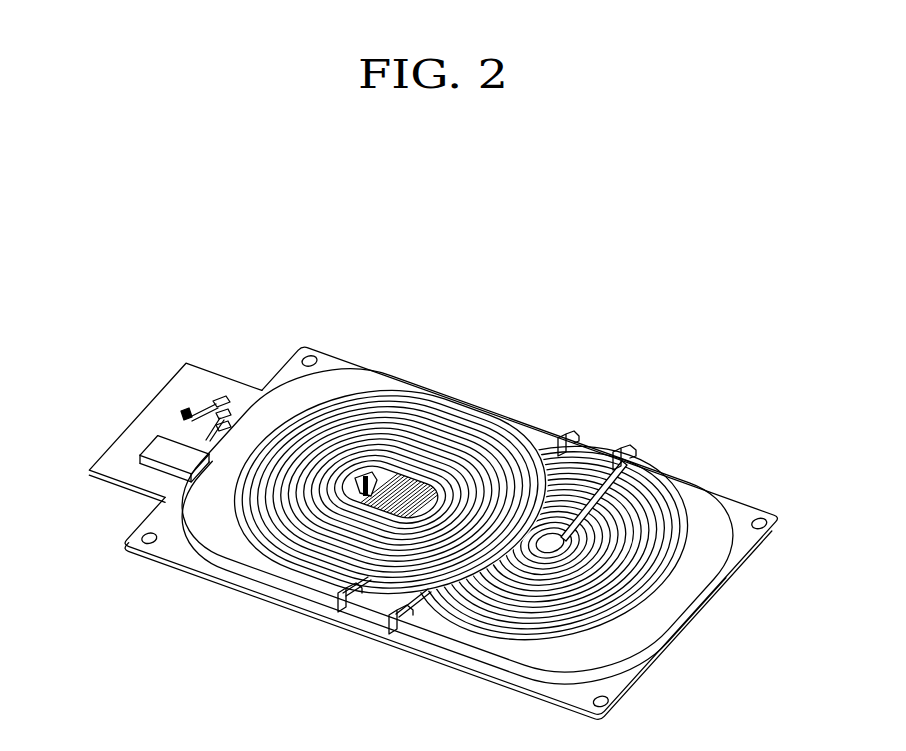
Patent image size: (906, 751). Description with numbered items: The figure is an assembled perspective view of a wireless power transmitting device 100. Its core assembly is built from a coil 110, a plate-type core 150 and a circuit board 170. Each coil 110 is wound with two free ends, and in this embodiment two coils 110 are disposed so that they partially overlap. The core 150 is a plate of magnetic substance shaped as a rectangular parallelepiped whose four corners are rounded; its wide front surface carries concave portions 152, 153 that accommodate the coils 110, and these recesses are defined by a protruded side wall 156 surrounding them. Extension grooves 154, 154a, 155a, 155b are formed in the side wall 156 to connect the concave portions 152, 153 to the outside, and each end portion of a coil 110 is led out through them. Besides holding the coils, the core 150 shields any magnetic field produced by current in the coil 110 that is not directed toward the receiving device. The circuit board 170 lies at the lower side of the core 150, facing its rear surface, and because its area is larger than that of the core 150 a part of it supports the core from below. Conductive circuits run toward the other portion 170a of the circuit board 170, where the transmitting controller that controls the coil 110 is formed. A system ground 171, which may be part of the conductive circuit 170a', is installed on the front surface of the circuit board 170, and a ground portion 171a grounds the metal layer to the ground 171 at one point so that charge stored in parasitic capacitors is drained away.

The wireless power transmitting device 100 is at (545, 272).
The coil 110 is at (428, 403).
The core 150 is at (470, 483).
The concave portion 152 is at (655, 492).
The concave portion 153 is at (367, 397).
The first terminal clip 154 is at (567, 435).
The extension groove 154a is at (620, 452).
The extension groove 155a is at (398, 636).
The extension groove 155b is at (342, 612).
The side wall 156 is at (697, 513).
The circuit board 170 is at (154, 421).
The other portion of the circuit board 170a is at (102, 516).
The conductive circuit 170a' is at (186, 377).
The ground 171 is at (182, 415).
The ground portion 171a is at (243, 403).